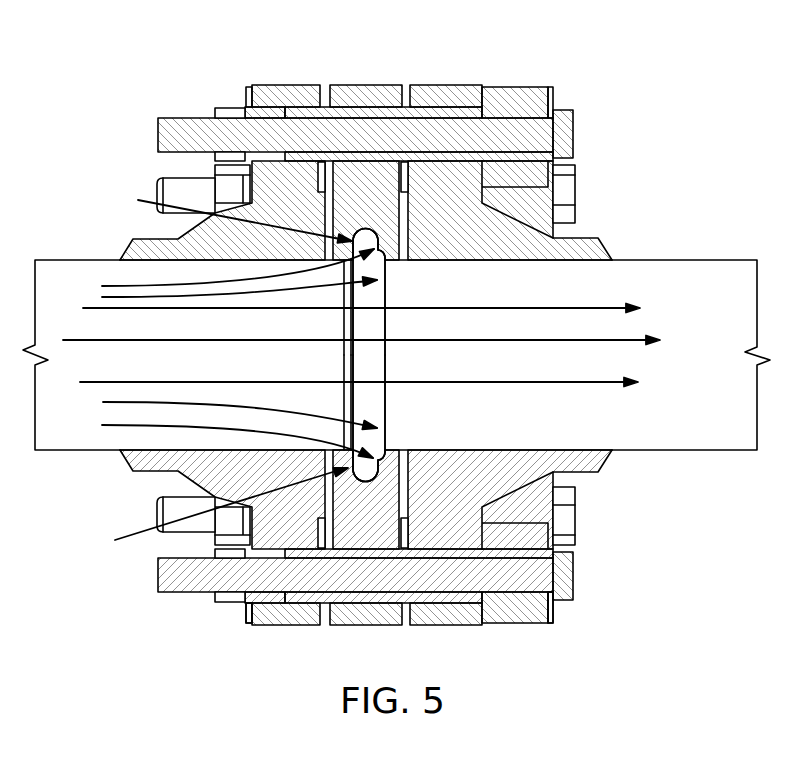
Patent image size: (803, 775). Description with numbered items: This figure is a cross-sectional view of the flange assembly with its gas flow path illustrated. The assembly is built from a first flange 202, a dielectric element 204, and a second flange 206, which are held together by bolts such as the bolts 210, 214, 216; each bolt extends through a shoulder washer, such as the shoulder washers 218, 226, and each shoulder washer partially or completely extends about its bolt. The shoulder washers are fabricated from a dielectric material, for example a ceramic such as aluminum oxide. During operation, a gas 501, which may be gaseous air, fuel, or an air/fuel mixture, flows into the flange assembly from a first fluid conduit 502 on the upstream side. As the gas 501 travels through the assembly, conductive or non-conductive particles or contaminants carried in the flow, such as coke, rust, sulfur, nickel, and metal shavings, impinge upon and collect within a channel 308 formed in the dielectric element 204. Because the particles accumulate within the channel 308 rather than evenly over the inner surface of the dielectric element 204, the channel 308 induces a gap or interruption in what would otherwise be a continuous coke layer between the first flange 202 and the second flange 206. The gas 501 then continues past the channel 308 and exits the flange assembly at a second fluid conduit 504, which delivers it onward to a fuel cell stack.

The first flange 202 is at (273, 85).
The dielectric element 204 is at (338, 85).
The second flange 206 is at (448, 85).
The shoulder washer 218 is at (528, 87).
The bolt 210 is at (578, 188).
The bolt 214 is at (578, 515).
The bolt 216 is at (575, 568).
The shoulder washer 226 is at (555, 612).
The channel 308 is at (364, 228).
The gas 501 is at (662, 303).
The first fluid conduit 502 is at (78, 258).
The second fluid conduit 504 is at (665, 258).